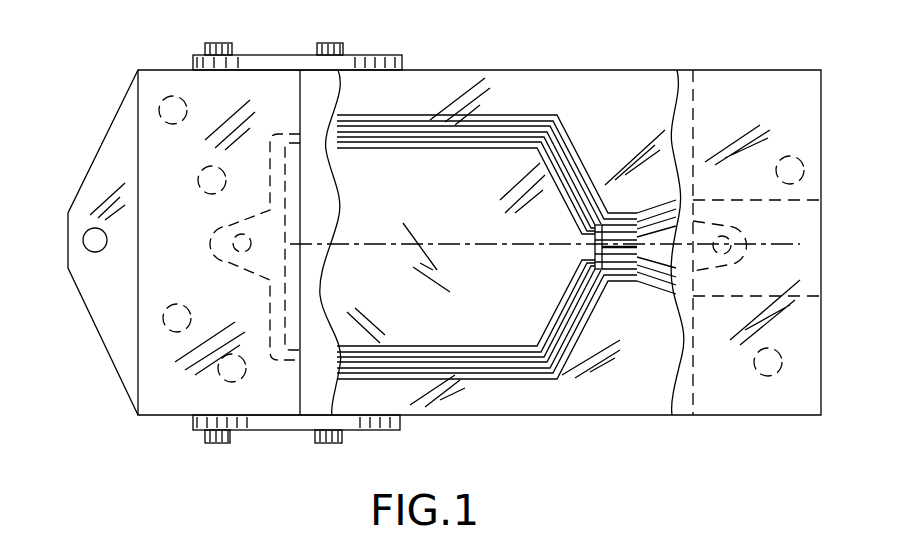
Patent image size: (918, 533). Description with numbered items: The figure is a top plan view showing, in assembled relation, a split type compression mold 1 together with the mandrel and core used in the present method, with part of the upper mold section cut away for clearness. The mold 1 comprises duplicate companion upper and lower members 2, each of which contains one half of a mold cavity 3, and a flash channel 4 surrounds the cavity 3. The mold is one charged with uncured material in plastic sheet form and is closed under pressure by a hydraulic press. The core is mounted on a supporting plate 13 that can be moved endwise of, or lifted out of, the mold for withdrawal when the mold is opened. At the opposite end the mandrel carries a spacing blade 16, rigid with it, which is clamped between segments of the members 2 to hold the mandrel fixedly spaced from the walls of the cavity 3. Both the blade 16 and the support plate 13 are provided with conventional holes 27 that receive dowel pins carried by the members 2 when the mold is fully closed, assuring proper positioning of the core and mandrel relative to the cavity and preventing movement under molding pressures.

The split type compression mold 1 is at (516, 414).
The upper and lower members 2 is at (630, 400).
The mold cavity 3 is at (485, 137).
The flash channel 4 is at (565, 133).
The supporting plate 13 is at (727, 398).
The spacing blade 16 is at (108, 137).
The holes 27 is at (167, 97).